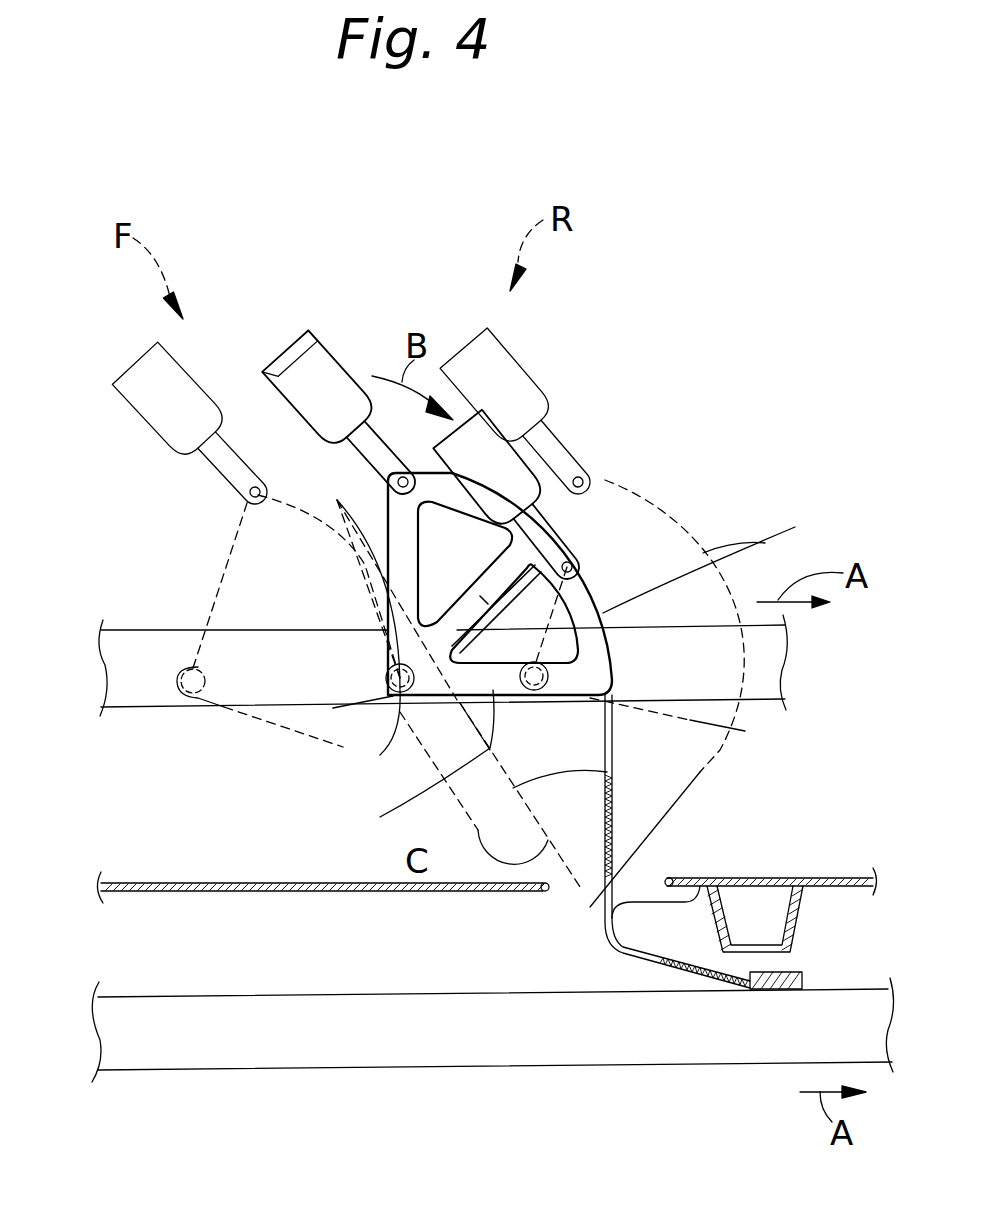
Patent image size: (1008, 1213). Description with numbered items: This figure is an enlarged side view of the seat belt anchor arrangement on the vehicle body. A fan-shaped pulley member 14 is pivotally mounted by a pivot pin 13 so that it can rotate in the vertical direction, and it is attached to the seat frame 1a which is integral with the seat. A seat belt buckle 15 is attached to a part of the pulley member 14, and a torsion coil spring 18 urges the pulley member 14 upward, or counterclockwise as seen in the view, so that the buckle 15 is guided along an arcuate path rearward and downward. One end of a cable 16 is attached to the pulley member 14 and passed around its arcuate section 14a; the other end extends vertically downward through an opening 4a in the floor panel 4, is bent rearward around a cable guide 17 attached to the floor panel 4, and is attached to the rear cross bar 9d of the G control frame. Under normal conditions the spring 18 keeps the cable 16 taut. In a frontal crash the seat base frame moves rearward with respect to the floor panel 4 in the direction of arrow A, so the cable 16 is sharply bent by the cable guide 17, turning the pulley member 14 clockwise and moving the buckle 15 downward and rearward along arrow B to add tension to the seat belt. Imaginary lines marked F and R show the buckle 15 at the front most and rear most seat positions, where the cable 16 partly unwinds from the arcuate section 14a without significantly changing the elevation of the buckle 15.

The seat frame 1a is at (140, 628).
The floor panel 4 is at (197, 883).
The opening 4a is at (547, 893).
The rear cross bar 9d is at (803, 982).
The pivot pin 13 is at (386, 676).
The pulley member 14 is at (212, 565).
The arcuate section 14a is at (470, 840).
The seat belt buckle 15 is at (212, 390).
The cable 16 is at (613, 818).
The cable guide 17 is at (670, 880).
The torsion coil spring 18 is at (392, 698).